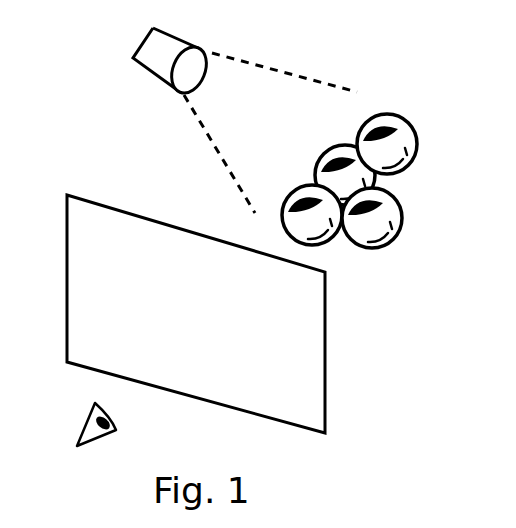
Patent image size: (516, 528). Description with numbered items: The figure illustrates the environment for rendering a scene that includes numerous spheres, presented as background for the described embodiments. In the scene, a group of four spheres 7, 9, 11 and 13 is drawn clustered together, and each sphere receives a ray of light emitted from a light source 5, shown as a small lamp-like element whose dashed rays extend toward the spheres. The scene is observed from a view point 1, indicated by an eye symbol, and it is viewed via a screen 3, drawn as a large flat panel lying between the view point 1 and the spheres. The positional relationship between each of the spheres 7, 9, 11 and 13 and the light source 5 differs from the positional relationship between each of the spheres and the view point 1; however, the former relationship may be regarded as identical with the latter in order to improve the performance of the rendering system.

The view point 1 is at (82, 430).
The screen 3 is at (327, 350).
The light source 5 is at (150, 78).
The sphere 7 is at (418, 134).
The sphere 9 is at (338, 147).
The sphere 11 is at (402, 222).
The sphere 13 is at (298, 190).